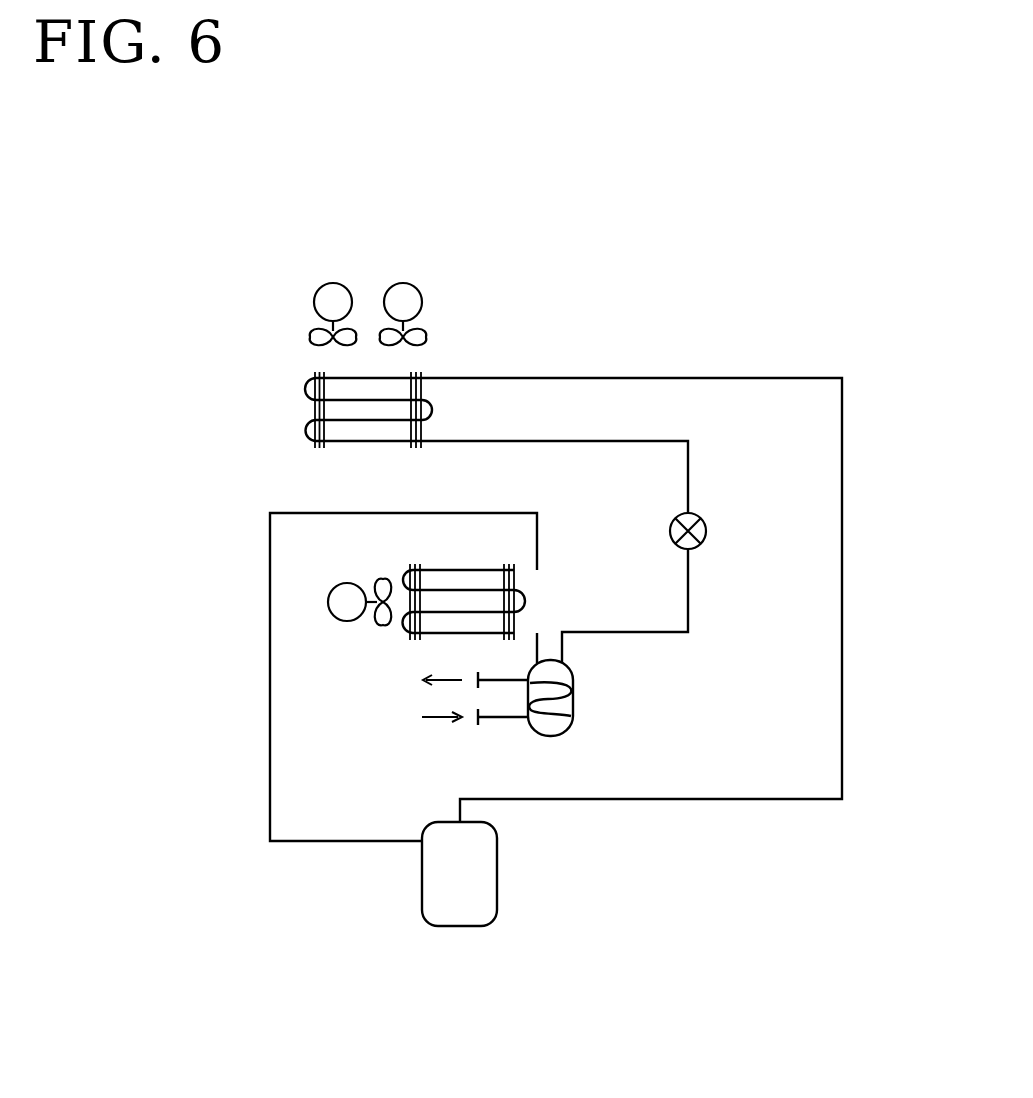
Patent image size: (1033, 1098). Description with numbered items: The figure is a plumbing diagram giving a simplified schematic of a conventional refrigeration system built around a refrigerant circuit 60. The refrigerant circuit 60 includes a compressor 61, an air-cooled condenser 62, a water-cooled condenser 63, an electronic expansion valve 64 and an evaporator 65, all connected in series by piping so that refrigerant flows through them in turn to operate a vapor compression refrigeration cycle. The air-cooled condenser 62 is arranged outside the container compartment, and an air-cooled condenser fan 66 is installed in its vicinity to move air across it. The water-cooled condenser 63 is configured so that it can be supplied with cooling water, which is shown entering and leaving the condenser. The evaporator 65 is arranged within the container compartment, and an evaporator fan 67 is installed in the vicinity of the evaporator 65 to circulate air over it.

The refrigerant circuit 60 is at (867, 295).
The compressor 61 is at (497, 868).
The air-cooled condenser 62 is at (525, 600).
The water-cooled condenser 63 is at (573, 700).
The electronic expansion valve 64 is at (706, 531).
The evaporator 65 is at (432, 410).
The air-cooled condenser fan 66 is at (382, 579).
The evaporator fan 67 is at (388, 338).